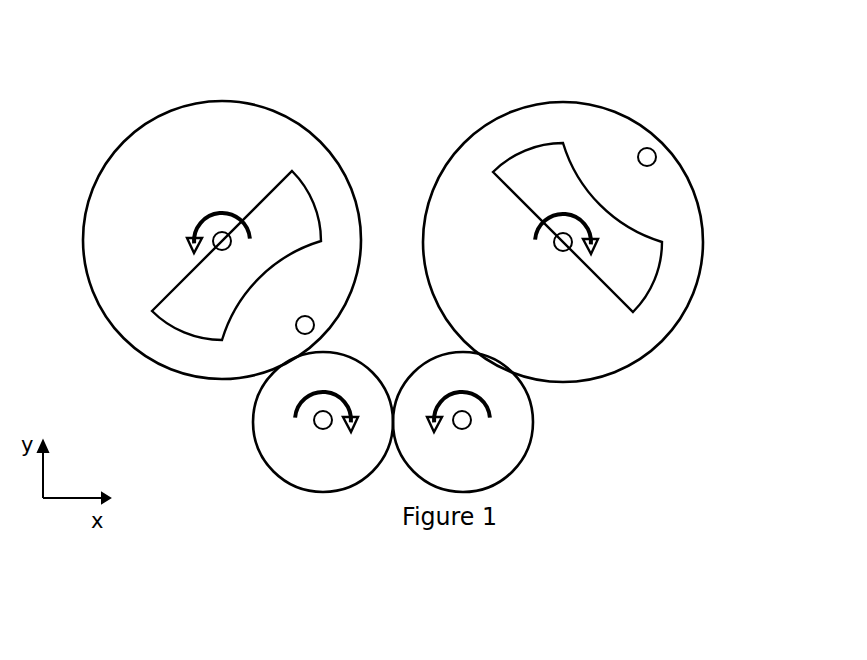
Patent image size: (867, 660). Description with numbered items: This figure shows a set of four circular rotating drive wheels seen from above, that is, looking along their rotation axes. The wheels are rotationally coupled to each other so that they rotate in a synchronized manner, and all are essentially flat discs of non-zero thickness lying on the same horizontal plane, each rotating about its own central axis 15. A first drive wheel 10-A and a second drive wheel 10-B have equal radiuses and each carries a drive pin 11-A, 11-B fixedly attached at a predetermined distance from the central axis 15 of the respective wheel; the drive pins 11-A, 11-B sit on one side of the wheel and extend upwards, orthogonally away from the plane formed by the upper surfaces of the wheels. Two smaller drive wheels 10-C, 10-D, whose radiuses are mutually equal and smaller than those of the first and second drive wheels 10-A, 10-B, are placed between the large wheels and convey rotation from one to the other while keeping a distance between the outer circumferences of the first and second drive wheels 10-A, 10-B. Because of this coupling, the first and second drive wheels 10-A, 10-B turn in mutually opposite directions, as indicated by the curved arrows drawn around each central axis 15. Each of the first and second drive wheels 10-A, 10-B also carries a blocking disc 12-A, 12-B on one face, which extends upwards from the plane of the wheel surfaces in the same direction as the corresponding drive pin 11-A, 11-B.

The first drive wheel 10-A is at (194, 140).
The second drive wheel 10-B is at (507, 125).
The smaller drive wheel 10-C is at (271, 427).
The smaller drive wheel 10-D is at (508, 418).
The drive pin 11-A is at (314, 325).
The drive pin 11-B is at (656, 157).
The blocking disc 12-A is at (200, 313).
The blocking disc 12-B is at (630, 260).
The central axis 15 is at (218, 232).